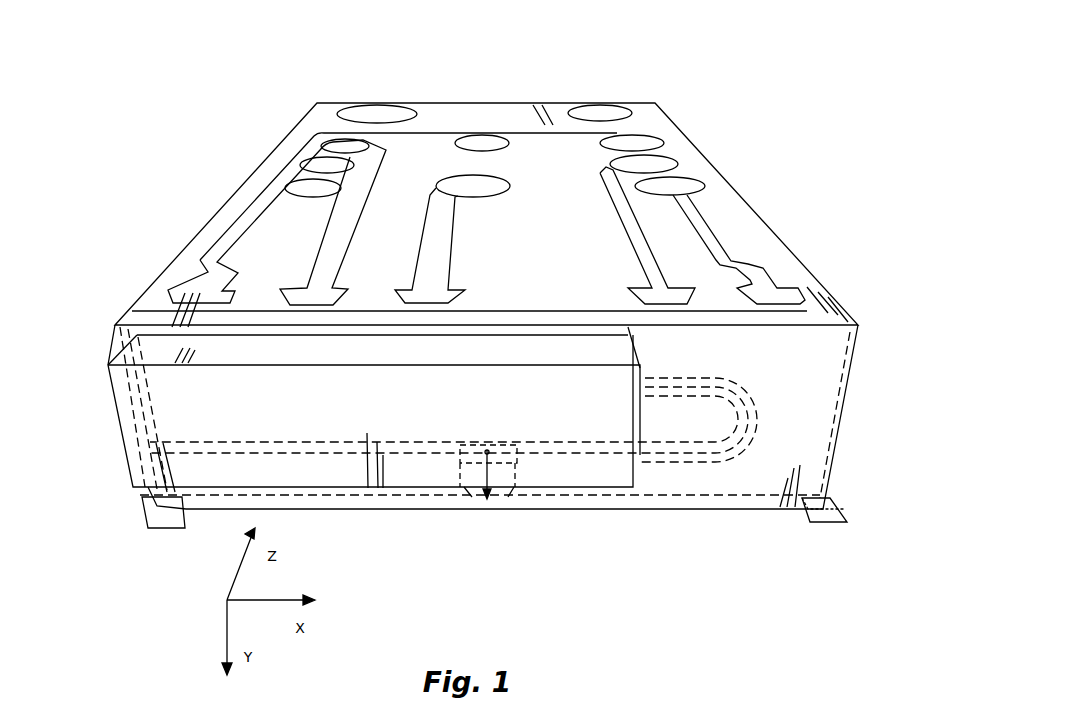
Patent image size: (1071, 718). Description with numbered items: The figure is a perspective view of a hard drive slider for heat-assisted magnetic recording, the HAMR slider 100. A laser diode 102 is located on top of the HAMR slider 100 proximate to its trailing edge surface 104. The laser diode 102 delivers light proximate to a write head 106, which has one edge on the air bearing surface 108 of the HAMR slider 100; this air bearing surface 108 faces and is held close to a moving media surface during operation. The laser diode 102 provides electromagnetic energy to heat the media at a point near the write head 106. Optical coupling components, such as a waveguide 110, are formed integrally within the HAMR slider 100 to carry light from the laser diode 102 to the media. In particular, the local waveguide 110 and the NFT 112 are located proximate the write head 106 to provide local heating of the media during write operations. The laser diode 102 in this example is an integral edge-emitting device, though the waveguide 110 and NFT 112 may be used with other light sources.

The HAMR slider 100 is at (663, 53).
The laser diode 102 is at (127, 469).
The trailing edge surface 104 is at (170, 533).
The write head 106 is at (494, 497).
The air bearing surface 108 is at (840, 525).
The waveguide 110 is at (700, 462).
The NFT 112 is at (485, 496).